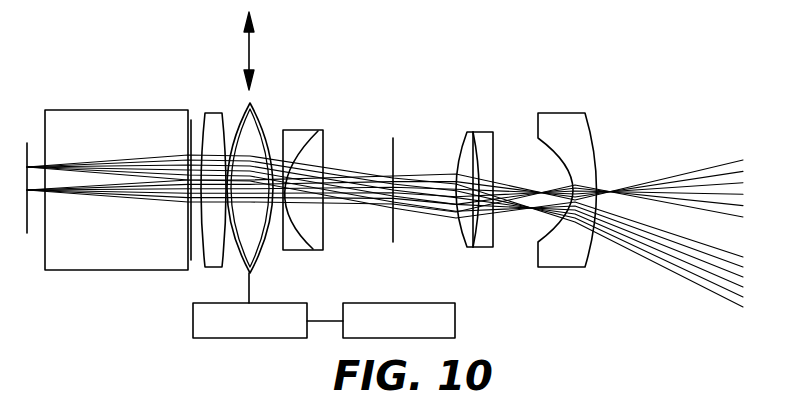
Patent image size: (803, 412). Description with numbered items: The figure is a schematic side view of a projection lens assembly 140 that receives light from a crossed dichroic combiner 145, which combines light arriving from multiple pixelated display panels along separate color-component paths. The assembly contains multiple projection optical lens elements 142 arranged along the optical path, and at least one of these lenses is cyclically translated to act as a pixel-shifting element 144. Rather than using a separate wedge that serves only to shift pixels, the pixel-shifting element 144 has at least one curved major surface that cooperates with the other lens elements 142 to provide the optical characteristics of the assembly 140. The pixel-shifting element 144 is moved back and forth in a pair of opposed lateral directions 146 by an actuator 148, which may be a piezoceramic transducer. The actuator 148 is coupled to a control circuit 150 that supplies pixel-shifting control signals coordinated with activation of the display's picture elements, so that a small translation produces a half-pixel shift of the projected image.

The projection lens assembly 140 is at (433, 87).
The projection optical lens elements 142 is at (213, 111).
The pixel-shifting element 144 is at (260, 122).
The crossed dichroic combiner 145 is at (115, 109).
The opposed lateral directions 146 is at (248, 47).
The actuator 148 is at (277, 303).
The control circuit 150 is at (398, 303).